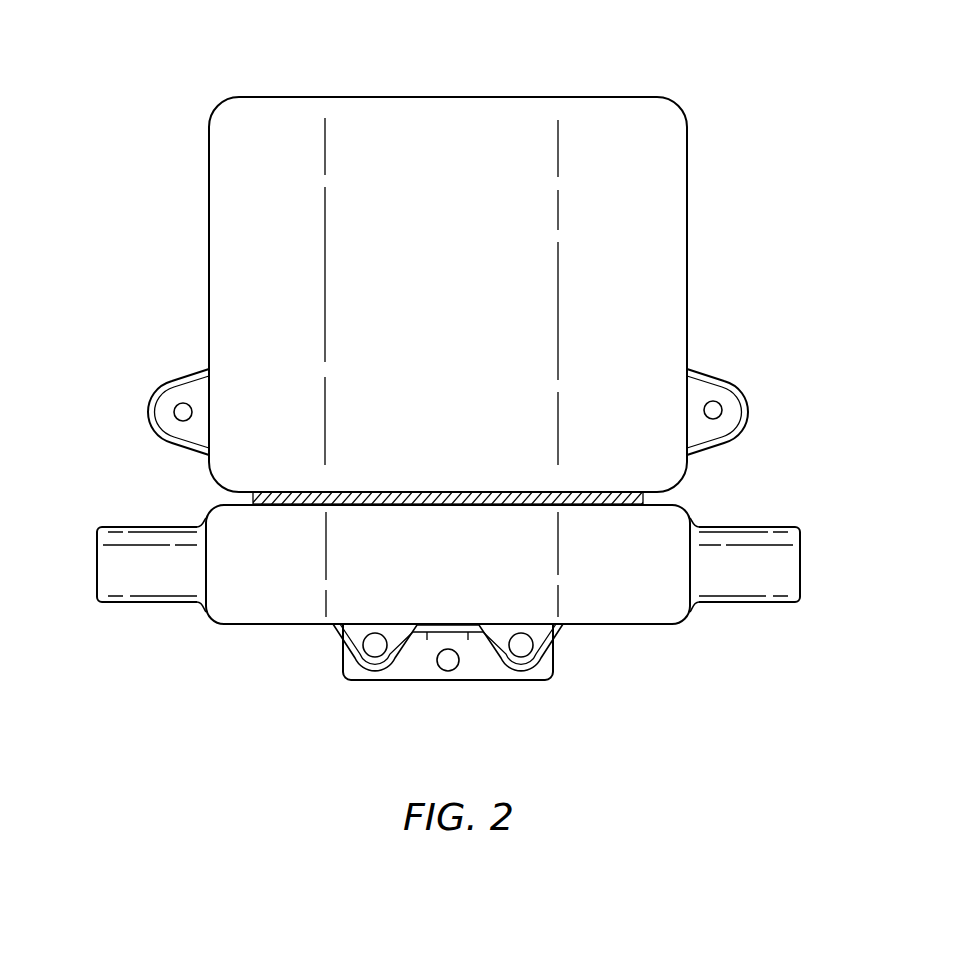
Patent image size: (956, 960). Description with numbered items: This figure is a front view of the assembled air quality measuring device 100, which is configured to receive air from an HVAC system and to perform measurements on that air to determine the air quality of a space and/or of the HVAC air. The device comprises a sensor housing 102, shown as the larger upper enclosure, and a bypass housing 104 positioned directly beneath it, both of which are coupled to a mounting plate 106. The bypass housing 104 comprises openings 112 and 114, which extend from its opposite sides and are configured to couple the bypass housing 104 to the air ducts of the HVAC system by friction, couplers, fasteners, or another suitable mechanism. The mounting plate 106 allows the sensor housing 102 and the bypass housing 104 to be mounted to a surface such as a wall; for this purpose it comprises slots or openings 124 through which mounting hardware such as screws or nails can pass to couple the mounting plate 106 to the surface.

The air quality measuring device 100 is at (164, 44).
The sensor housing 102 is at (468, 303).
The bypass housing 104 is at (468, 573).
The mounting plate 106 is at (496, 672).
The opening 112 is at (802, 562).
The opening 114 is at (96, 562).
The slots or openings 124 is at (182, 403).